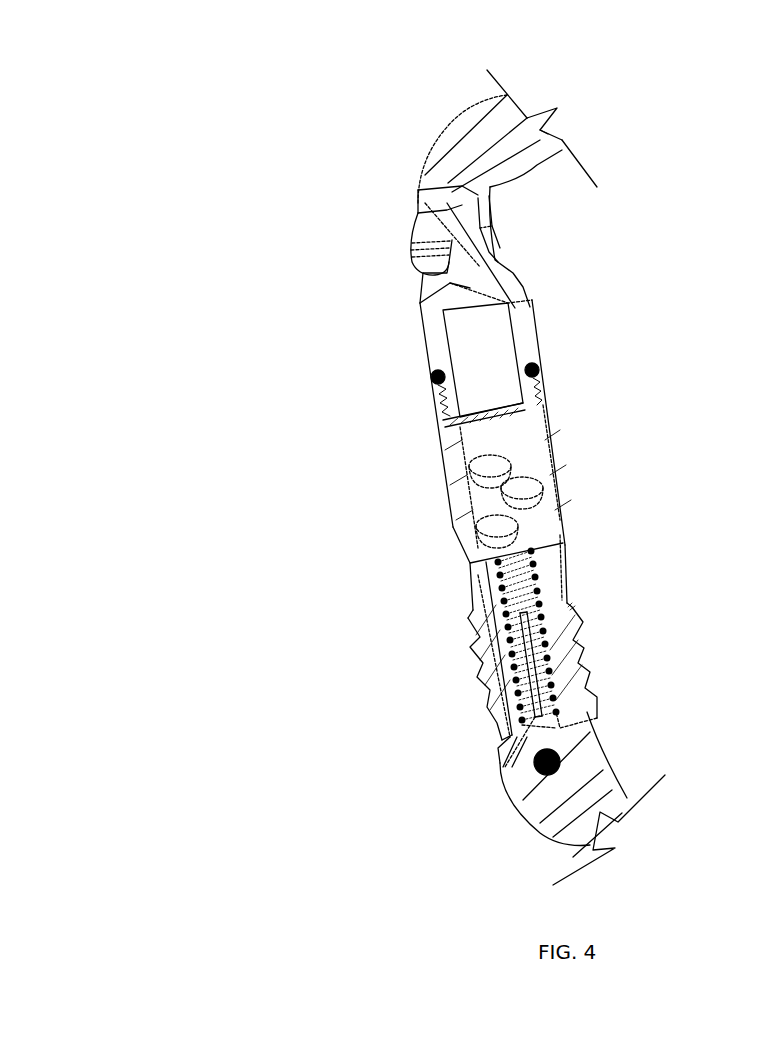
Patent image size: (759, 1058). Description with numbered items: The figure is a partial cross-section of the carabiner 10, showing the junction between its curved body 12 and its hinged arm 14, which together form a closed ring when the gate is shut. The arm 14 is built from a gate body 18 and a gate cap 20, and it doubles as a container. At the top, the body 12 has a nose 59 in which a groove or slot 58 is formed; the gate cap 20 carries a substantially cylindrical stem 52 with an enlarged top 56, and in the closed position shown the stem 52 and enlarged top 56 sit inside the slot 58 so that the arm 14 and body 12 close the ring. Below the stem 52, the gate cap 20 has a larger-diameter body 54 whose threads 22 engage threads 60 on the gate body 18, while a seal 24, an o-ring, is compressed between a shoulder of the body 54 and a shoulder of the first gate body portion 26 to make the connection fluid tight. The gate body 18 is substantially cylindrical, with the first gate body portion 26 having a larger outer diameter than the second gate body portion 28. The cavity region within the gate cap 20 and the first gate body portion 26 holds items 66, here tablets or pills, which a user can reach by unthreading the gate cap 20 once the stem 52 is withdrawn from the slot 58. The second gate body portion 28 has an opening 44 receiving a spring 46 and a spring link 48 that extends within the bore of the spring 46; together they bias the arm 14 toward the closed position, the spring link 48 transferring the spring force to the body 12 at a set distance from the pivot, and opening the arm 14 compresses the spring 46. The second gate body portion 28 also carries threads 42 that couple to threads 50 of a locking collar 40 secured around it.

The carabiner 10 is at (177, 252).
The body 12 is at (455, 118).
The arm 14 is at (296, 550).
The gate body 18 is at (437, 478).
The gate cap 20 is at (392, 325).
The threads 22 is at (538, 380).
The seal 24 is at (430, 376).
The first gate body portion 26 is at (558, 469).
The second gate body portion 28 is at (563, 578).
The locking collar 40 is at (598, 688).
The threads 42 is at (580, 622).
The opening 44 is at (501, 590).
The spring 46 is at (498, 576).
The spring link 48 is at (515, 738).
The threads 50 is at (590, 650).
The stem 52 is at (481, 243).
The body 54 is at (540, 316).
The enlarged top 56 is at (432, 215).
The slot 58 is at (422, 253).
The nose 59 is at (422, 158).
The threads 60 is at (435, 405).
The items 66 is at (470, 468).